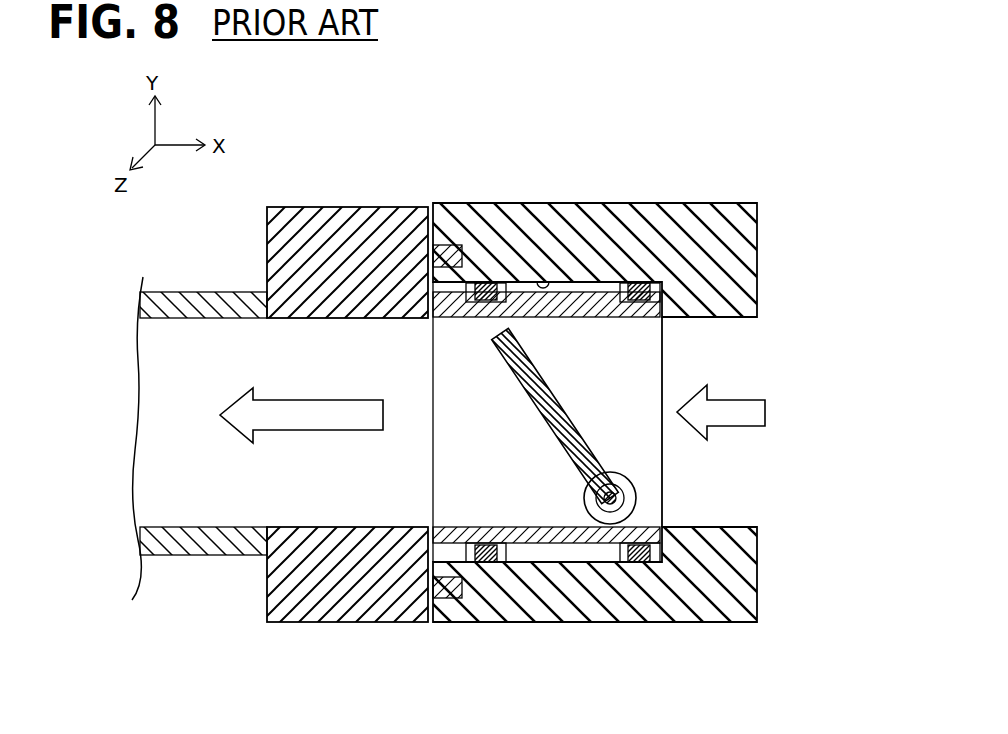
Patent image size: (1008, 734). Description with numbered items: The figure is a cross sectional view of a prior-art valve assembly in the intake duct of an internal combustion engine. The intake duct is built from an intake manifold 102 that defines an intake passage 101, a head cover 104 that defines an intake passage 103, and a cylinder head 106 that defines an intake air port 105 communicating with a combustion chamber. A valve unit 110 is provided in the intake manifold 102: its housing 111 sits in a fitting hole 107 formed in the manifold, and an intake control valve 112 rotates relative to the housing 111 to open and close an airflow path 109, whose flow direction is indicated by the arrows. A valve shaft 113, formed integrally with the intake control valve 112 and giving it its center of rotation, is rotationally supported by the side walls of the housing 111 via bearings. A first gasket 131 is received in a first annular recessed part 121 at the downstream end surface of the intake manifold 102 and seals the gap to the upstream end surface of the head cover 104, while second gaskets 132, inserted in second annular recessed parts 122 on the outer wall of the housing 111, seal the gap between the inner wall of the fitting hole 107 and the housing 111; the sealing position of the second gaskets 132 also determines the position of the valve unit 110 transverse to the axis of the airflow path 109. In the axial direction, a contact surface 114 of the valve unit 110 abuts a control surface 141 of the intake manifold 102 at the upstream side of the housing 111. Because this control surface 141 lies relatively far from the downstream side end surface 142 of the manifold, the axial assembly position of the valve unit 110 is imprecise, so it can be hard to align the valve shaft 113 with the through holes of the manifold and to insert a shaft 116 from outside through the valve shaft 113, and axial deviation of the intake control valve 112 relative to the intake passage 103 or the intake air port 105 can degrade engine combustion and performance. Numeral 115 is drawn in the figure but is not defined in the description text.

The intake passage 101 is at (727, 495).
The intake manifold 102 is at (755, 597).
The intake passage 103 is at (354, 495).
The head cover 104 is at (400, 612).
The intake air port 105 is at (214, 478).
The cylinder head 106 is at (200, 556).
The fitting hole 107 is at (535, 282).
The airflow path 109 is at (506, 495).
The valve unit 110 is at (423, 277).
The housing 111 is at (590, 300).
The intake control valve 112 is at (496, 340).
The valve shaft 113 is at (628, 492).
The contact surface 114 is at (655, 540).
The shaft 115 is at (607, 507).
The shaft 116 is at (592, 560).
The first annular recessed part 121 is at (440, 590).
The second annular recessed parts 122 is at (478, 565).
The first gasket 131 is at (445, 612).
The second gaskets 132 is at (487, 570).
The control surface 141 is at (645, 290).
The downstream side end surface 142 is at (430, 296).